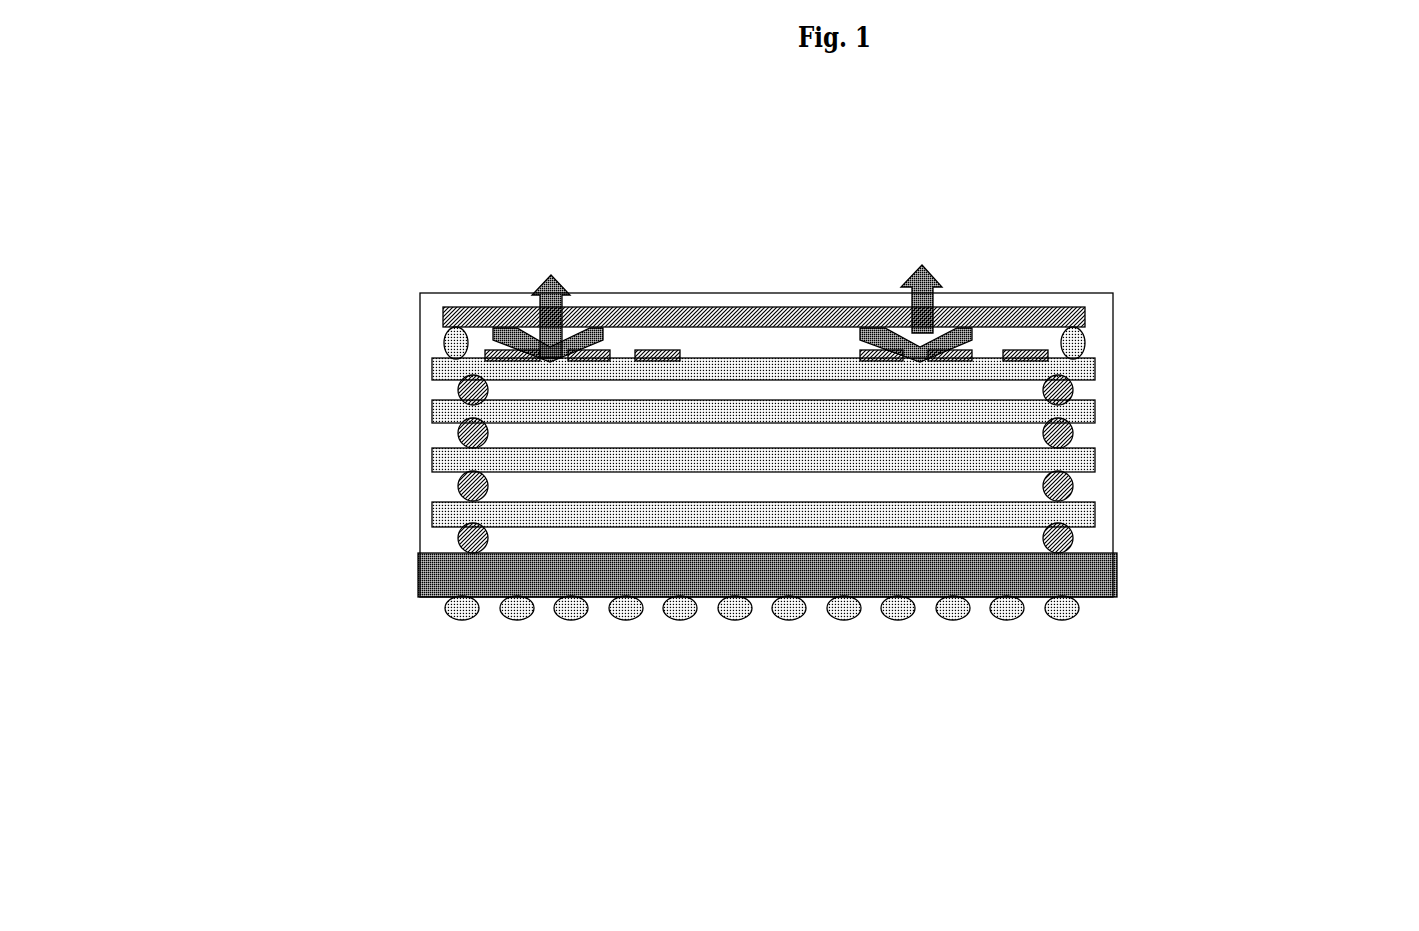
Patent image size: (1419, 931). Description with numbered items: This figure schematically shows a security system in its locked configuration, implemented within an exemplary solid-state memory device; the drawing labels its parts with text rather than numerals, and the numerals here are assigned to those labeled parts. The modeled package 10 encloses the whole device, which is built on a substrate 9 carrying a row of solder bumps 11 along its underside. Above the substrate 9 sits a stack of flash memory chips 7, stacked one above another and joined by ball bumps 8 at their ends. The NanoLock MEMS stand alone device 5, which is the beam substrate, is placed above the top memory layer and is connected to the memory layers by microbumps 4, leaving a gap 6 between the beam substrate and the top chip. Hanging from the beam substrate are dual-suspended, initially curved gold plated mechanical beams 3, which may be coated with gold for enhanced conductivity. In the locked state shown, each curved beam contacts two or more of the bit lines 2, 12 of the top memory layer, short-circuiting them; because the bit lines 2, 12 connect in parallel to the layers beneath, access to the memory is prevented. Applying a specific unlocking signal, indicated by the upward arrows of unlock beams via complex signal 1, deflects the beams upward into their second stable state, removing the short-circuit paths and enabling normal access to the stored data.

The Unlock Beams via complex signal (actuation arrows) 1 is at (917, 267).
The Bit lines (left) 2 is at (505, 307).
The AU plated mechanical Beams 3 is at (642, 268).
The Microbumps 4 is at (1088, 333).
The NanoLock MEMS Stand alone Device 5 is at (443, 318).
The Gap 6 is at (1144, 339).
The Flash memory chips 7 is at (432, 467).
The Ball bumps 8 is at (1073, 492).
The Substrate 9 is at (712, 575).
The Modeled package 10 is at (1113, 545).
The C4 bumps 11 is at (762, 630).
The Bit lines (right) 12 is at (1028, 347).